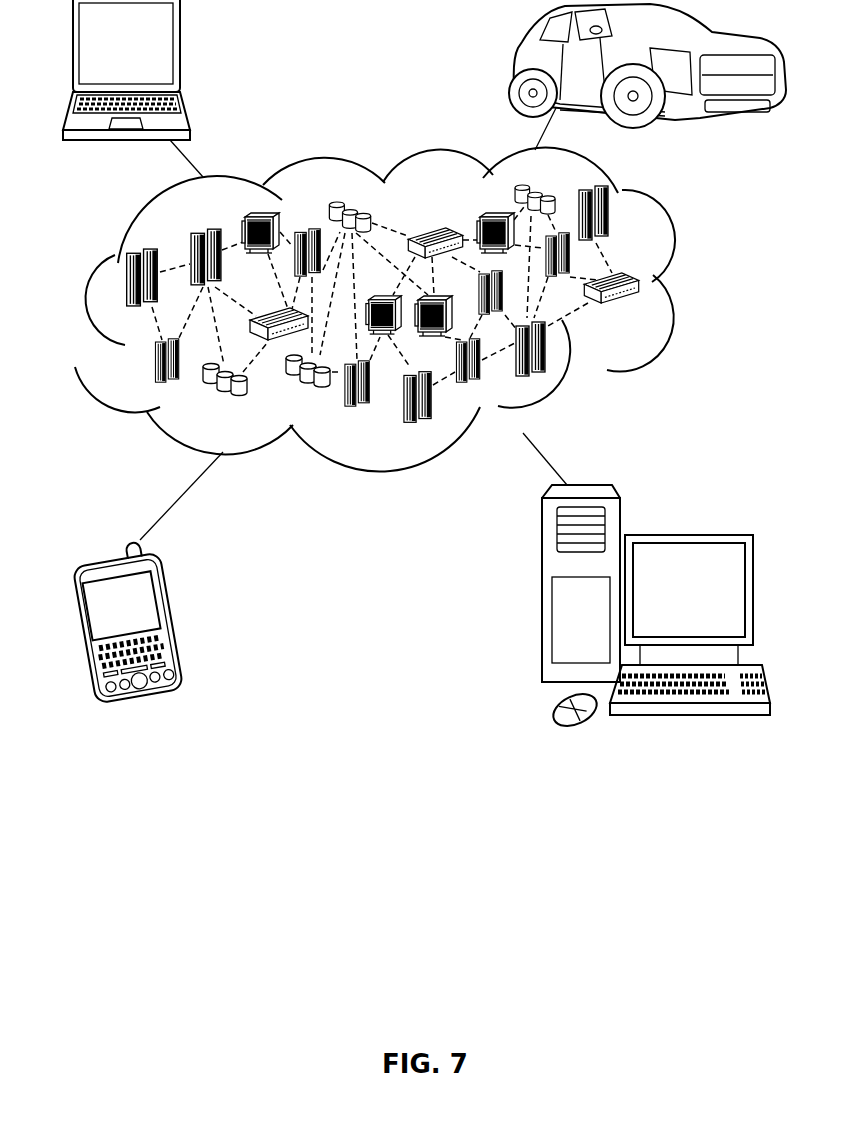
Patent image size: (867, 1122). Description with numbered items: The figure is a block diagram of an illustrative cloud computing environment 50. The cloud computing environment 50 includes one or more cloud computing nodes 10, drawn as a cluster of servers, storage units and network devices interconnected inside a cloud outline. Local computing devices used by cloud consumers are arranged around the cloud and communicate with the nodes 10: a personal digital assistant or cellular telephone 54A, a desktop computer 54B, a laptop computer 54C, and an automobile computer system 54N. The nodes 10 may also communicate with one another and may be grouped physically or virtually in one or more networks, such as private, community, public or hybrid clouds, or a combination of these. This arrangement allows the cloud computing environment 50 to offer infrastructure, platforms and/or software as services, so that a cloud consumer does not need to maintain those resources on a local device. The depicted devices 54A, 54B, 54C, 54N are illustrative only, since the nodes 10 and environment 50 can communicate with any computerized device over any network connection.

The cloud computing node 10 is at (650, 321).
The cloud computing environment 50 is at (685, 285).
The personal digital assistant or cellular telephone 54A is at (175, 616).
The desktop computer 54B is at (685, 535).
The laptop computer 54C is at (180, 52).
The automobile computer system 54N is at (518, 24).